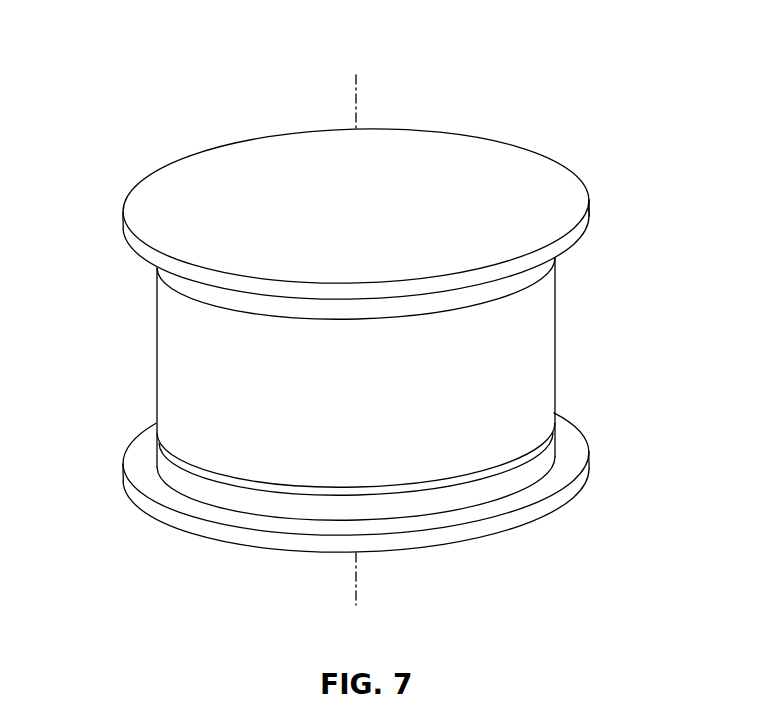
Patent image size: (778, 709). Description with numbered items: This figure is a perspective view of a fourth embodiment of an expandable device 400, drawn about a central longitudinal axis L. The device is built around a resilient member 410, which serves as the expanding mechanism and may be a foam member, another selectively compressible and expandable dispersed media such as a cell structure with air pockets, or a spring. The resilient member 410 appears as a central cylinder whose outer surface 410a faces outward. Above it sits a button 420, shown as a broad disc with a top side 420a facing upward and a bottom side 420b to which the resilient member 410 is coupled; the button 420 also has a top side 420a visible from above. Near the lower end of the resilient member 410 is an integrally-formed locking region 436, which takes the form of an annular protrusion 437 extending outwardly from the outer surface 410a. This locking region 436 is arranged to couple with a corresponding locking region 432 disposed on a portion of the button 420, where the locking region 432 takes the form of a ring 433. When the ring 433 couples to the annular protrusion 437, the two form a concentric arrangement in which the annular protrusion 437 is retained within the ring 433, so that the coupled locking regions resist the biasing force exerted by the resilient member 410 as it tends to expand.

The expandable device 400 is at (149, 77).
The resilient member 410 is at (173, 340).
The outer surface of the resilient member 410a is at (396, 396).
The button 420 is at (587, 192).
The top side of the button 420a is at (500, 168).
The bottom side of the button 420b is at (585, 240).
The locking region 432 is at (537, 300).
The ring 433 is at (168, 276).
The locking region 436 is at (186, 450).
The annular protrusion 437 is at (558, 425).
The longitudinal axis L is at (362, 103).